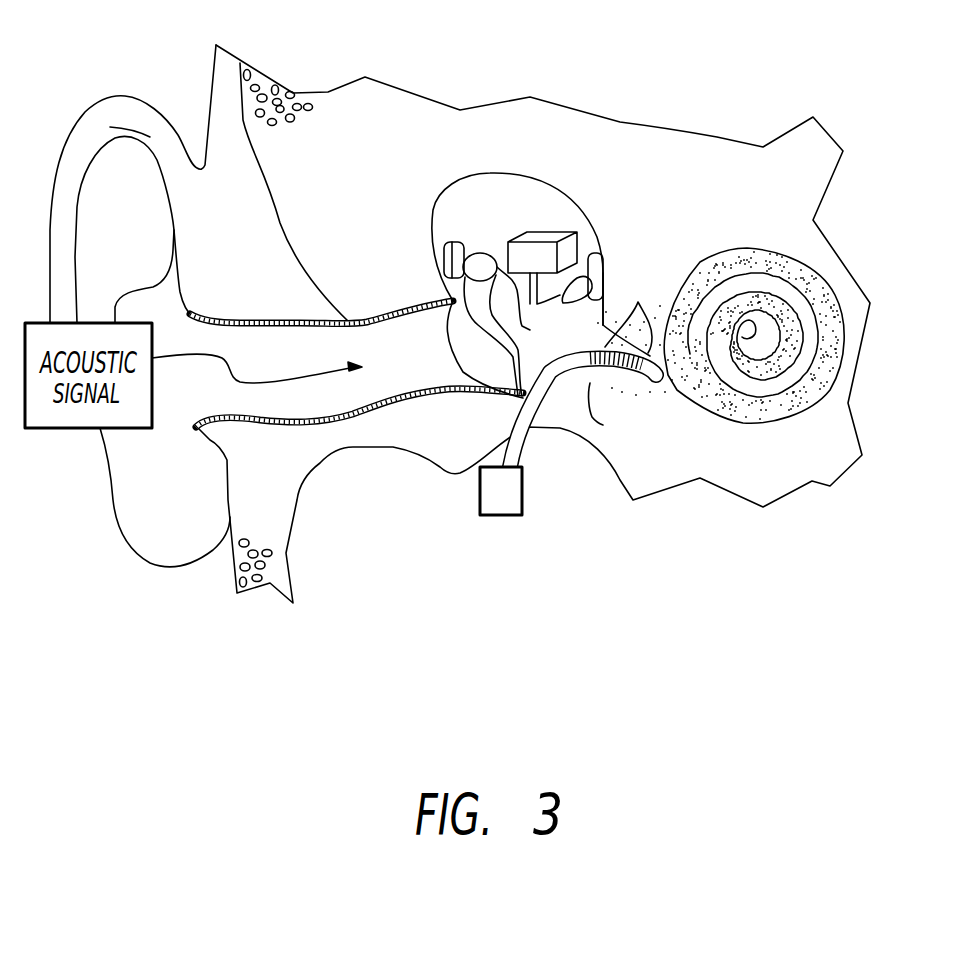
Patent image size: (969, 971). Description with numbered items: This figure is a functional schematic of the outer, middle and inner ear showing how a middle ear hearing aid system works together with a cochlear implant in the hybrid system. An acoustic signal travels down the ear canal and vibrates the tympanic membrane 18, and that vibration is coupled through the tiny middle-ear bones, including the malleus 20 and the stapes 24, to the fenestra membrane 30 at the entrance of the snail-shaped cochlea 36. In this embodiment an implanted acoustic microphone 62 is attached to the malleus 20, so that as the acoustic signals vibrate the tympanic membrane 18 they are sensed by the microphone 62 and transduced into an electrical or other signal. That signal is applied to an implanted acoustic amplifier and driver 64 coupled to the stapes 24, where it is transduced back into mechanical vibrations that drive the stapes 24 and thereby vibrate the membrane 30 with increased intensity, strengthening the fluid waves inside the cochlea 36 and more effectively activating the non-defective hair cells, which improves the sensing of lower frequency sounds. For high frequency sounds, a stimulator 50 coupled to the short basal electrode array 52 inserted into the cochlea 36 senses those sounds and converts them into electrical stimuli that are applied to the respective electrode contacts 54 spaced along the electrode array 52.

The tympanic membrane 18 is at (457, 351).
The malleus 20 is at (474, 253).
The stapes 24 is at (594, 254).
The fenestra membrane 30 is at (603, 273).
The cochlea 36 is at (745, 253).
The implantable cochlear stimulator 50 is at (500, 515).
The cochlear electrode array 52 is at (623, 380).
The electrode contacts 54 is at (639, 301).
The acoustic microphone 62 is at (440, 259).
The acoustic amplifier and driver 64 is at (540, 237).